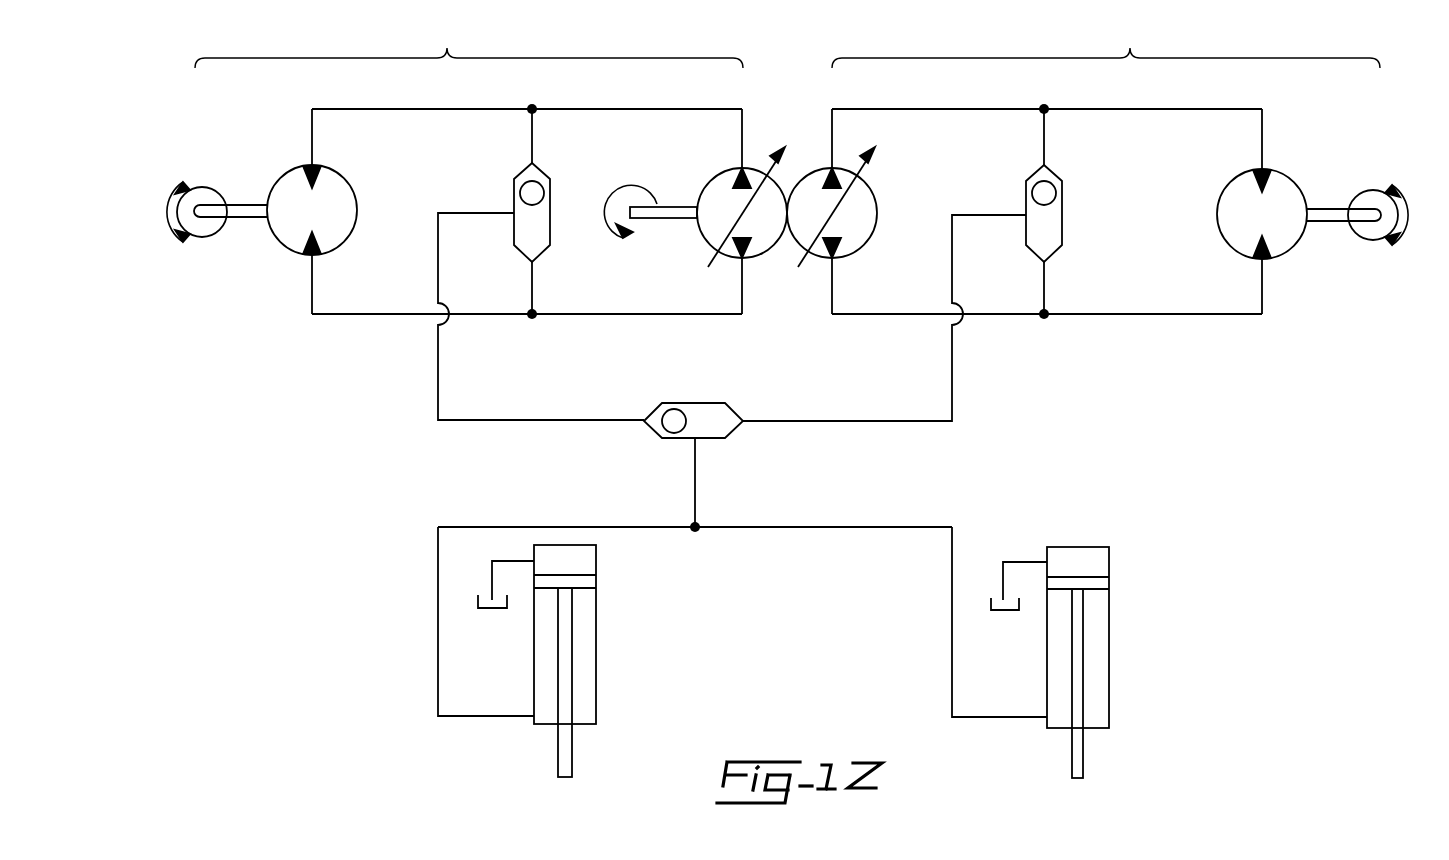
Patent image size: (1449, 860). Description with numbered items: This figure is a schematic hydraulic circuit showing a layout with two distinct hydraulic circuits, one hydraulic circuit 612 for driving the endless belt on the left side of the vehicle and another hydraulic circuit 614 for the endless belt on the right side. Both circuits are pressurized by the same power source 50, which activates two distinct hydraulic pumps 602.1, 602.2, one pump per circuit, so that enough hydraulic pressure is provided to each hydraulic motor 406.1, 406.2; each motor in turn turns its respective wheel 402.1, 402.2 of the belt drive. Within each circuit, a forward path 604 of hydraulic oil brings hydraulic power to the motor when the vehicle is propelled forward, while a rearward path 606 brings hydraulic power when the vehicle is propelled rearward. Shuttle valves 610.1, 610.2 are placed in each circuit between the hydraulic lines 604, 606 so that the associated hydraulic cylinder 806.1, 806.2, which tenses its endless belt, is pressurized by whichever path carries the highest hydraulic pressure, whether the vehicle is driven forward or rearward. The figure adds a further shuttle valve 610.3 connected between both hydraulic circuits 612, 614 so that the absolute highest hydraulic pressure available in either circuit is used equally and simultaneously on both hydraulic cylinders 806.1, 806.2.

The power source 50 is at (676, 206).
The driving wheel 402.1 is at (202, 186).
The driving wheel 402.2 is at (1382, 190).
The hydraulic motor 406.1 is at (287, 250).
The hydraulic motor 406.2 is at (1287, 252).
The hydraulic pump 602.1 is at (765, 253).
The hydraulic pump 602.2 is at (860, 252).
The forward path 604 is at (482, 315).
The rearward path 606 is at (640, 109).
The shuttle valve 610.1 is at (545, 255).
The shuttle valve 610.2 is at (1053, 253).
The shuttle valve 610.3 is at (715, 440).
The hydraulic circuit 612 is at (469, 44).
The hydraulic circuit 614 is at (1106, 44).
The hydraulic cylinder 806.1 is at (596, 703).
The hydraulic cylinder 806.2 is at (1109, 695).